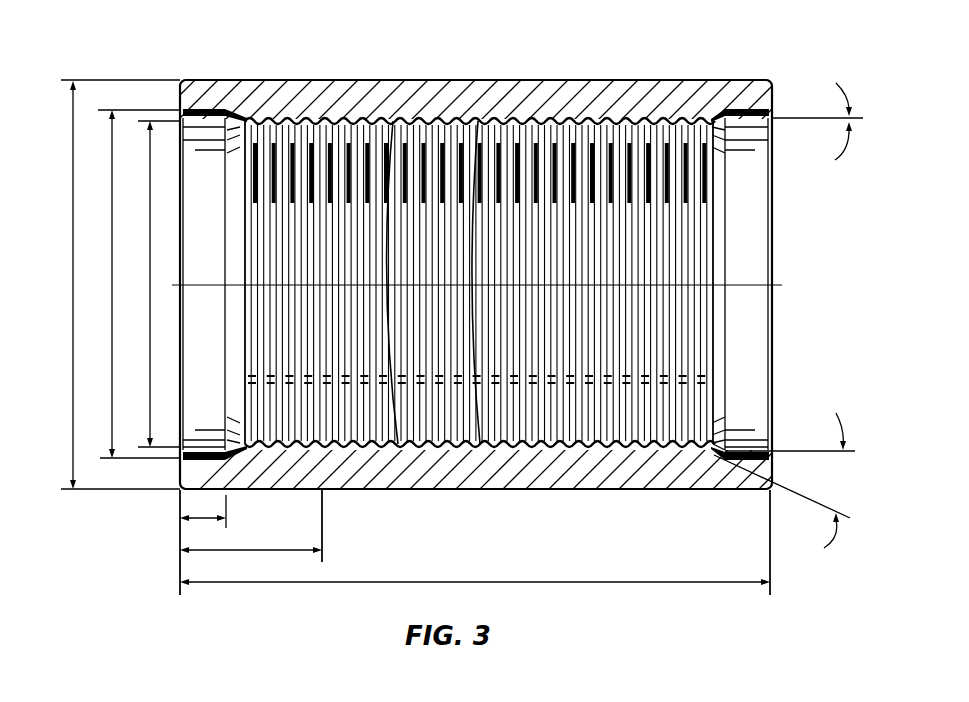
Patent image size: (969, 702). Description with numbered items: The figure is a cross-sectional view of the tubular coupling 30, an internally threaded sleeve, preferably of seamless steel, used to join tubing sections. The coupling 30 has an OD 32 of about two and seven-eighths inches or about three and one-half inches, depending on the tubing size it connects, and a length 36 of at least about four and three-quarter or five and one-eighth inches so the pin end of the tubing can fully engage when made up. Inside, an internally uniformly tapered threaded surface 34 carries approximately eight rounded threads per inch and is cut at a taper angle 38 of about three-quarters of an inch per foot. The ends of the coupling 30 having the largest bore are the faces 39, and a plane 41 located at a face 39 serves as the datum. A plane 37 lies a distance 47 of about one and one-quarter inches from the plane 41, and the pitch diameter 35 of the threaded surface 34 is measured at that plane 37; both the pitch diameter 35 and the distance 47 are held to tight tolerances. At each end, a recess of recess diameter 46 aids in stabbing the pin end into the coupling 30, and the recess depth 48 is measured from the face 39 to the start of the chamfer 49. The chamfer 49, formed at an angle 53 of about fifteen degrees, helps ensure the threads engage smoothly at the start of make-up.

The tubular coupling 30 is at (555, 80).
The OD 32 is at (73, 194).
The internally uniformly tapered threaded surface 34 is at (388, 272).
The pitch diameter 35 is at (150, 253).
The length 36 is at (455, 582).
The plane 37 is at (323, 533).
The taper angle 38 is at (844, 148).
The face 39 is at (774, 93).
The plane 41 is at (179, 564).
The recess diameter 46 is at (112, 223).
The distance 47 is at (252, 550).
The recess depth 48 is at (198, 518).
The chamfer 49 is at (715, 456).
The angle 53 is at (832, 540).